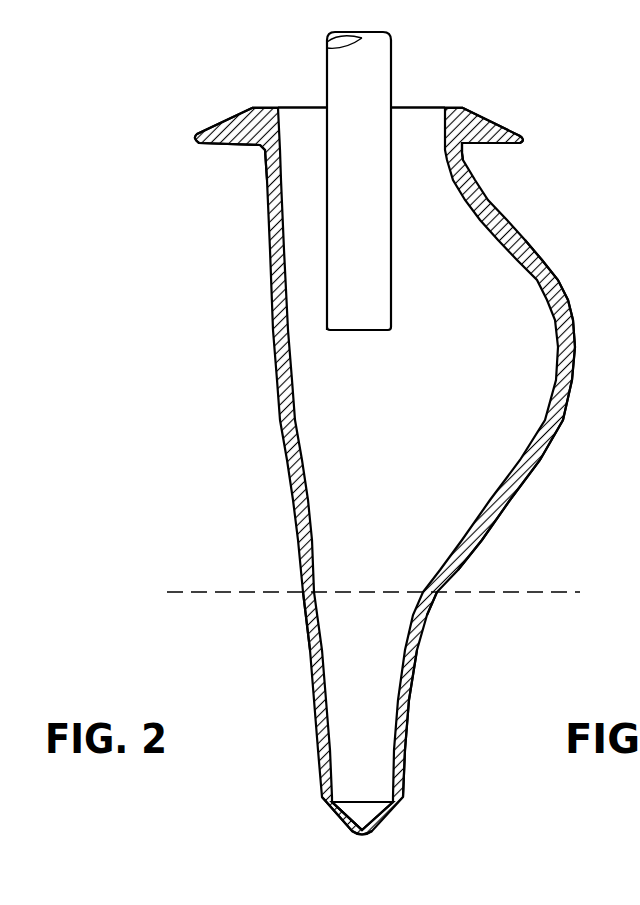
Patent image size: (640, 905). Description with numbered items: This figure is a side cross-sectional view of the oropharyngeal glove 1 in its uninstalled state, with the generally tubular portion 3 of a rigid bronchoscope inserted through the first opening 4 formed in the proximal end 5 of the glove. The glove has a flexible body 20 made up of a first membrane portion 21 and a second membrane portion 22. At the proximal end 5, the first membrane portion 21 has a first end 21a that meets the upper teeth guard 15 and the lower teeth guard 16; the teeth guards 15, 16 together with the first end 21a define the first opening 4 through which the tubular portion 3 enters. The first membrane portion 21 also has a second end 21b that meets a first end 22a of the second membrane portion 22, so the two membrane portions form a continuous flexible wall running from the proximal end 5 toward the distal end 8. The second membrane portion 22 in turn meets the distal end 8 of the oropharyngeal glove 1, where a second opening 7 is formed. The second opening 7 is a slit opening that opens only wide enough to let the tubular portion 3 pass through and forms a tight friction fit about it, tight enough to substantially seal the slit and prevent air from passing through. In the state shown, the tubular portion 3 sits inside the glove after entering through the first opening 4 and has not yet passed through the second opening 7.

The oropharyngeal glove 1 is at (437, 372).
The generally tubular portion 3 is at (367, 265).
The first opening 4 is at (293, 107).
The proximal end 5 is at (452, 107).
The second opening 7 is at (373, 832).
The distal end 8 is at (347, 823).
The upper teeth guard 15 is at (490, 117).
The lower teeth guard 16 is at (217, 122).
The flexible body 20 is at (575, 348).
The first membrane portion 21 is at (540, 452).
The first end of the first membrane portion 21a is at (260, 152).
The second end of the first membrane portion 21b is at (302, 592).
The second membrane portion 22 is at (410, 685).
The first end of the second membrane portion 22a is at (302, 600).